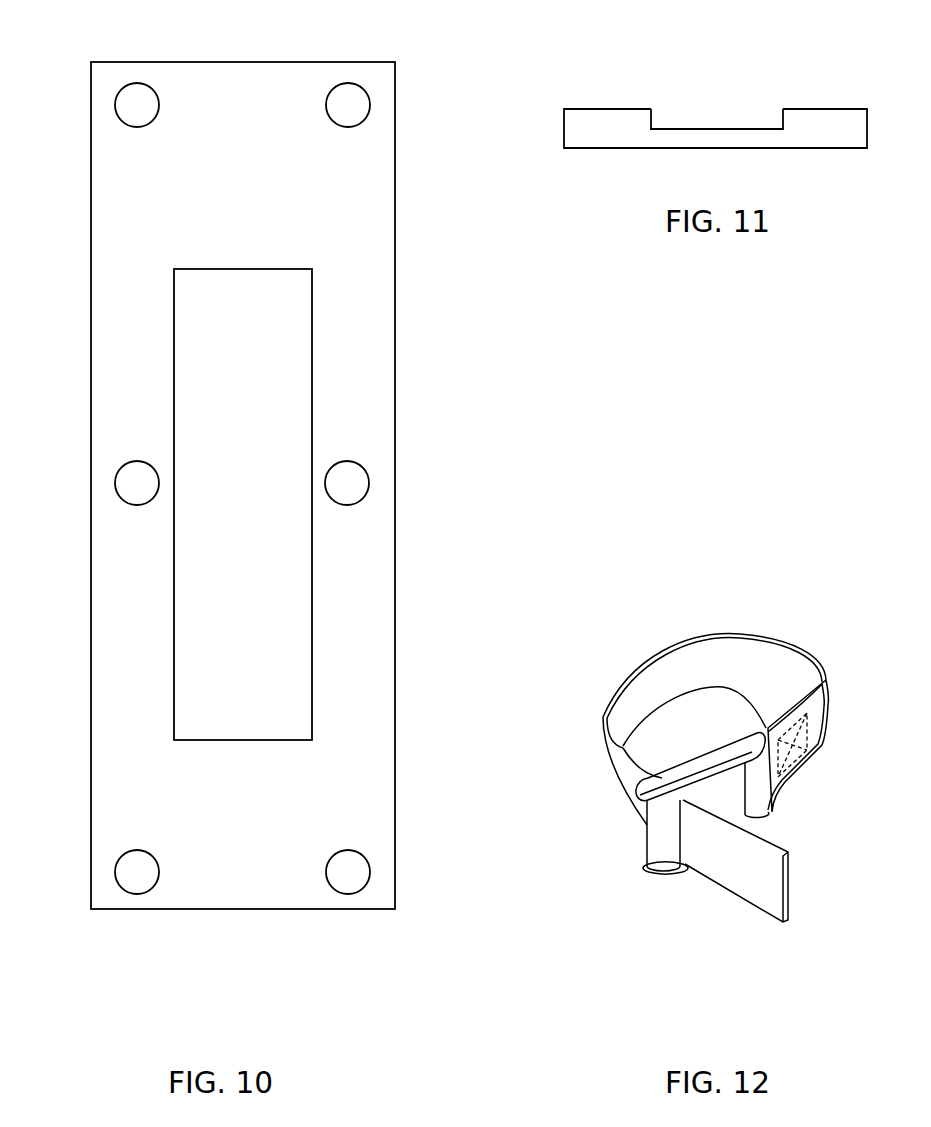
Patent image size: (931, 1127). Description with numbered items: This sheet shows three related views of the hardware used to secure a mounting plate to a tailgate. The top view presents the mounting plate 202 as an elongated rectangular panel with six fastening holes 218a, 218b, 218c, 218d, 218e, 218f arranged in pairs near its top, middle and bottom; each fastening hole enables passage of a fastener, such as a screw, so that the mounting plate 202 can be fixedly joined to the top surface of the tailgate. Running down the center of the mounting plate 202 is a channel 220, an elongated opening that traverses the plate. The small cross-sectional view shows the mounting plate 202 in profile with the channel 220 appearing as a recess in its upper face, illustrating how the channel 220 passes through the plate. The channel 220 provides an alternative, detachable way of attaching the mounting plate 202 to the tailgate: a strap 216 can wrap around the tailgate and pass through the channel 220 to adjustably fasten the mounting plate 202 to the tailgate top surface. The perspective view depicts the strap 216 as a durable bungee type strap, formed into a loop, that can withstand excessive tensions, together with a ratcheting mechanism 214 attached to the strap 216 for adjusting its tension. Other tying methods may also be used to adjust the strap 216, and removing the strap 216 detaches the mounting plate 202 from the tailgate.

In FIG. 10, the mounting plate 202 is at (420, 376).
In FIG. 11, the mounting plate 202 is at (581, 113).
In FIG. 10, the channel 220 is at (322, 610).
In FIG. 11, the channel 220 is at (693, 102).
In FIG. 10, the fastening hole 218a is at (139, 92).
In FIG. 10, the fastening hole 218b is at (348, 92).
In FIG. 10, the fastening hole 218c is at (122, 480).
In FIG. 10, the fastening hole 218d is at (360, 482).
In FIG. 10, the fastening hole 218e is at (139, 884).
In FIG. 10, the fastening hole 218f is at (347, 884).
In FIG. 12, the strap 216 is at (753, 635).
In FIG. 12, the ratcheting mechanism 214 is at (647, 842).